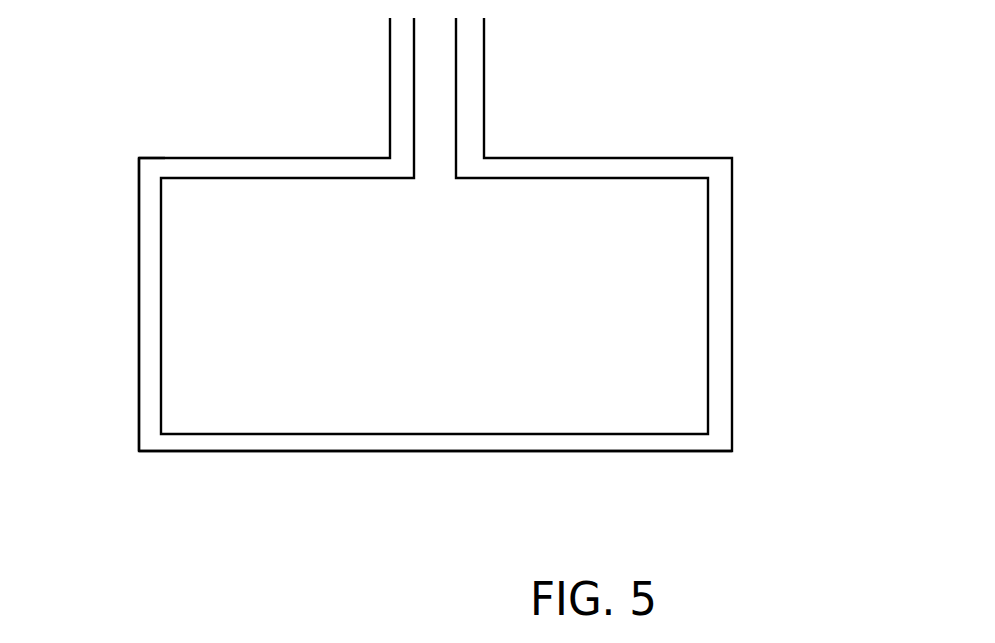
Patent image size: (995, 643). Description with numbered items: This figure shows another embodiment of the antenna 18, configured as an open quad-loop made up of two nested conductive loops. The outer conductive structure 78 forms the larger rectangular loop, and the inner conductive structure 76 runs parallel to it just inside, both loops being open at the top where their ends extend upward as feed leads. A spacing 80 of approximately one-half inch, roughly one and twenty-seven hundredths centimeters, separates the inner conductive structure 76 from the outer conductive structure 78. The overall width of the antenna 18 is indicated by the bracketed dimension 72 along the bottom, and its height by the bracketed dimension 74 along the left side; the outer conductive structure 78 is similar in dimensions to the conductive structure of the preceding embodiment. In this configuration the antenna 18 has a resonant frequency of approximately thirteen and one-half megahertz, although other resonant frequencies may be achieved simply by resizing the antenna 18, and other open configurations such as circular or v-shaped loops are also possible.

The antenna 18 is at (768, 243).
The bottom edge of cell 72 is at (732, 464).
The side edge of cell 74 is at (125, 157).
The inner conductive structure 76 is at (710, 202).
The outer conductive structure 78 is at (731, 418).
The spacing 80 is at (140, 133).